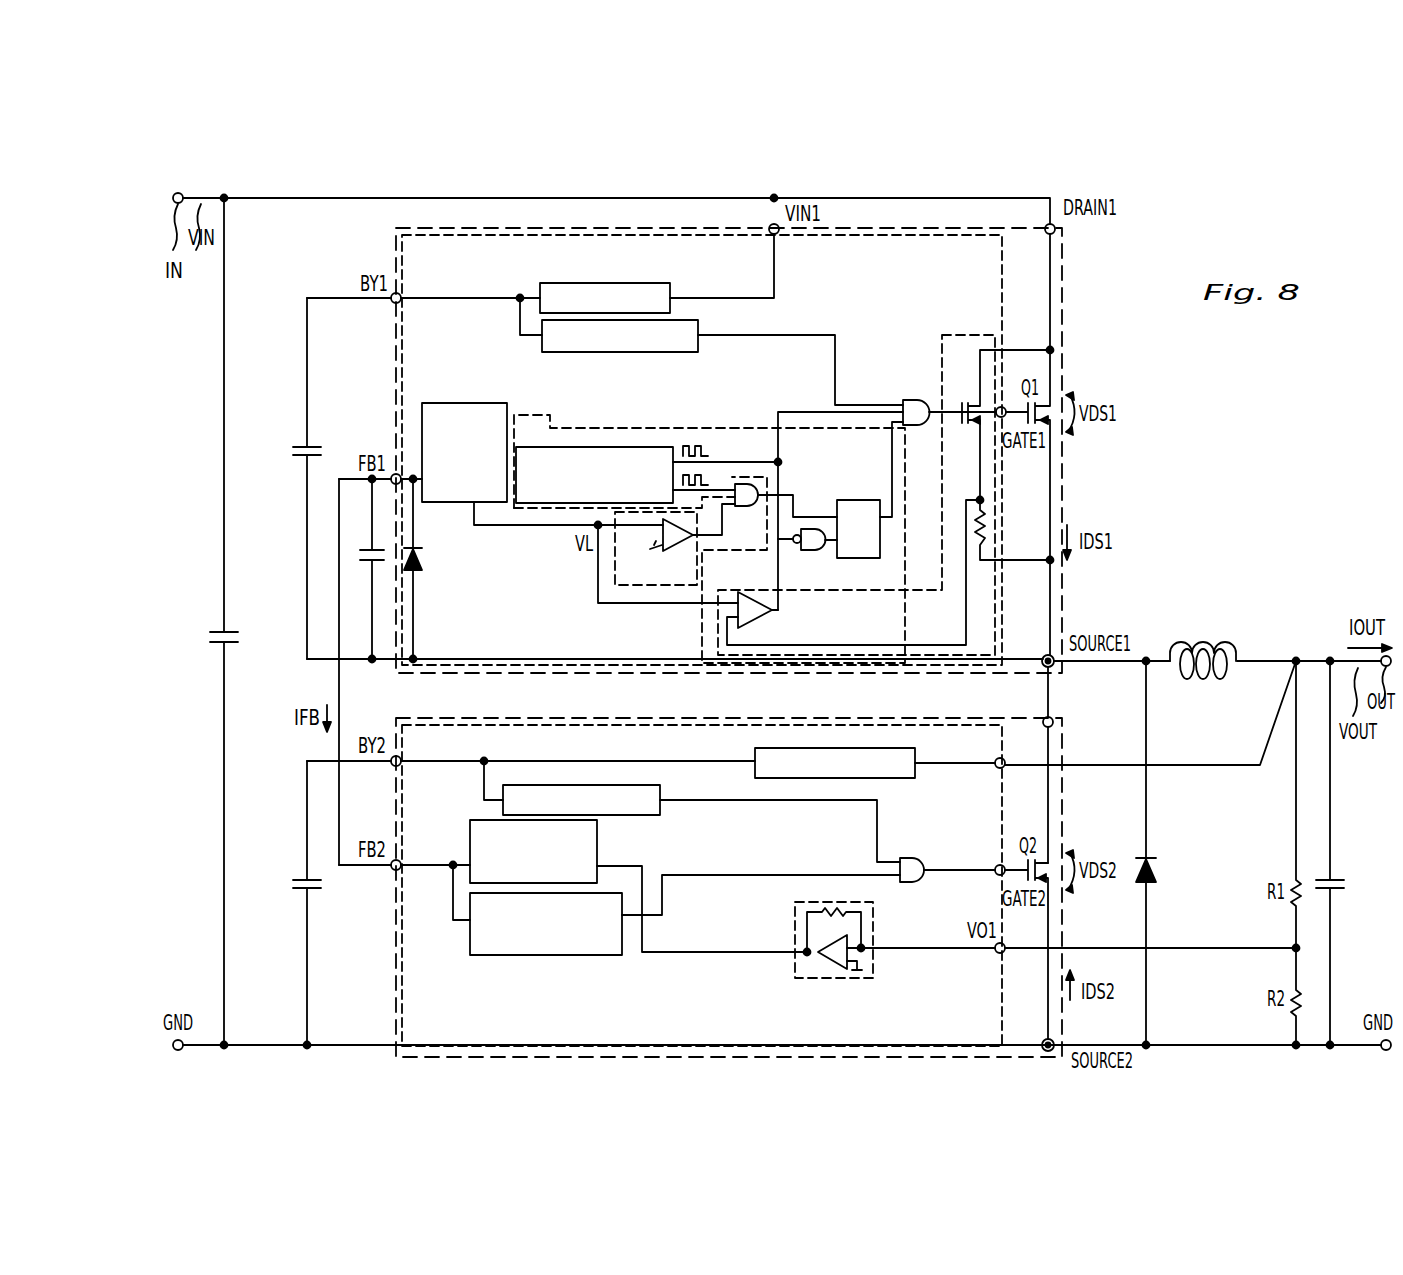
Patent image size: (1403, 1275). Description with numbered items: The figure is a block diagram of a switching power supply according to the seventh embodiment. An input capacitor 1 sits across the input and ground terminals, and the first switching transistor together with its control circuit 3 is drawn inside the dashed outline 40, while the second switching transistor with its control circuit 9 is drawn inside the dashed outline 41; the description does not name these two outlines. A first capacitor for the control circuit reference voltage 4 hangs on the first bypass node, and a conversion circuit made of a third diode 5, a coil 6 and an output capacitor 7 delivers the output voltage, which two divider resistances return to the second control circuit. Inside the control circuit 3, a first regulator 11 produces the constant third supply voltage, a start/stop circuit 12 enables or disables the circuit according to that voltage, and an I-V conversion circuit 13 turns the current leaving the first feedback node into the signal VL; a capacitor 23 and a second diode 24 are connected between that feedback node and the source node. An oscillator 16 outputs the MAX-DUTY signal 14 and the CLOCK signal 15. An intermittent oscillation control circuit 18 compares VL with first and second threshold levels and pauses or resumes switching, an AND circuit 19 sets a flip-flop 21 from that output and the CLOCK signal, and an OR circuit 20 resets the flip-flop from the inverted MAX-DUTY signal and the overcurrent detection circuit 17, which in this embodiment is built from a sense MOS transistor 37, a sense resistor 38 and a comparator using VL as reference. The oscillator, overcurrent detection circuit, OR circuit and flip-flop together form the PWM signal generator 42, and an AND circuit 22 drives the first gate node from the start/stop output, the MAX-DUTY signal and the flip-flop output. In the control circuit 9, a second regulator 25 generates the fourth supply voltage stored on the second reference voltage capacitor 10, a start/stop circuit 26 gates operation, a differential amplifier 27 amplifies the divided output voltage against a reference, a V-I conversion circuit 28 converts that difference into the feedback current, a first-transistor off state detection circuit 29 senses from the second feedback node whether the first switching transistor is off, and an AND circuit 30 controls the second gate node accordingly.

The input capacitor 1 is at (227, 623).
The control circuit 3 is at (1001, 248).
The first capacitor for the control circuit reference voltage 4 is at (303, 478).
The third diode 5 is at (1154, 853).
The coil 6 is at (1203, 674).
The output capacitor 7 is at (1331, 853).
The control circuit 9 is at (997, 732).
The second reference voltage capacitor 10 is at (299, 903).
The first regulator 11 is at (605, 283).
The start/stop circuit 12 is at (606, 342).
The I-V conversion circuit 13 is at (463, 438).
The MAX-DUTY signal 14 is at (725, 452).
The CLOCK signal 15 is at (704, 481).
The oscillator 16 is at (624, 465).
The overcurrent detection circuit 17 is at (886, 466).
The intermittent oscillation control circuit 18 is at (620, 588).
The AND circuit 19 is at (786, 510).
The OR circuit 20 is at (807, 553).
The flip-flop 21 is at (871, 529).
The AND circuit 22 is at (949, 397).
The capacitor 23 is at (365, 569).
The second diode 24 is at (425, 569).
The second regulator 25 is at (847, 757).
The start/stop circuit 26 is at (593, 807).
The differential amplifier 27 is at (839, 944).
The V-I conversion circuit 28 is at (546, 851).
The Q1 OFF state detection circuit 29 is at (534, 925).
The AND circuit 30 is at (947, 855).
The sense MOS transistor 37 is at (1000, 425).
The sense resistor 38 is at (1012, 530).
The first semiconductor device 40 is at (1066, 296).
The second semiconductor device 41 is at (1066, 802).
The PWM signal generator 42 is at (770, 427).